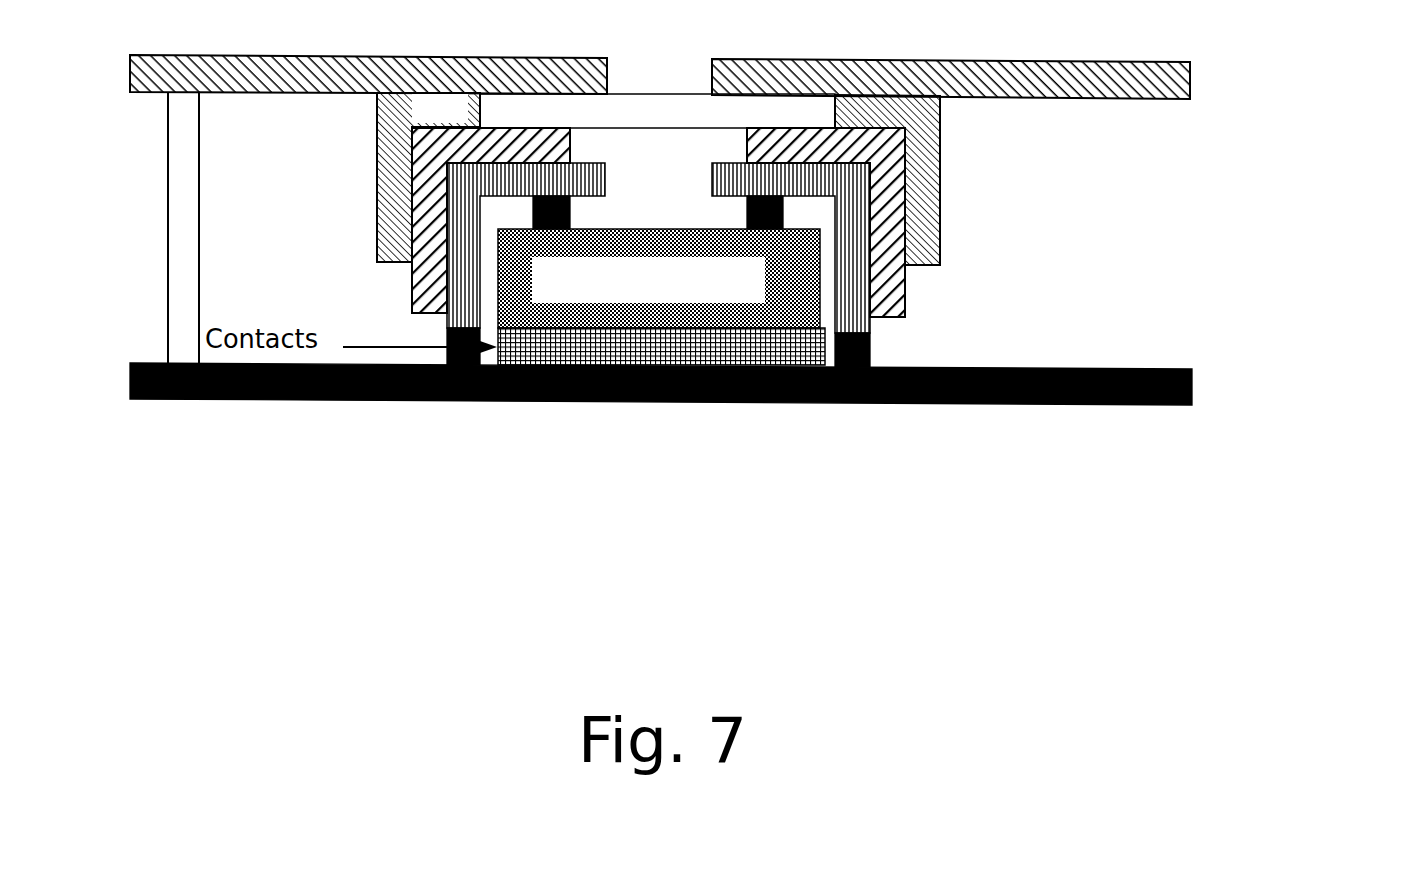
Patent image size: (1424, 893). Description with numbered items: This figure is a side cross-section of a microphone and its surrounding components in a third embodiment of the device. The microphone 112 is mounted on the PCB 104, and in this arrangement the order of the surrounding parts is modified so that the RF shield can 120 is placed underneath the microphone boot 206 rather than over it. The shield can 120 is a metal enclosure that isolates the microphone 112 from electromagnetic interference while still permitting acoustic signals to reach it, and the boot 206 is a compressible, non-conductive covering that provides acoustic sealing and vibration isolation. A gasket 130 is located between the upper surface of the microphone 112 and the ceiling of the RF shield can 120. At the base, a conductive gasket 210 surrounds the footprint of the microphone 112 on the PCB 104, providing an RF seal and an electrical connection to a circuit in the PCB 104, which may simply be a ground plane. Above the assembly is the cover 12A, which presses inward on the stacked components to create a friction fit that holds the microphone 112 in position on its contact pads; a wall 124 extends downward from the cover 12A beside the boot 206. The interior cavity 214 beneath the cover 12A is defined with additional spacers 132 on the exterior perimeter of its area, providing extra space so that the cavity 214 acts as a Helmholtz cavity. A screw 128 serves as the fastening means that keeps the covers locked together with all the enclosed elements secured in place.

The cover 12A is at (768, 77).
The interior cavity 214 is at (750, 113).
The wall 124 is at (958, 129).
The spacers 132 is at (440, 108).
The microphone boot 206 is at (923, 164).
The RF shield can 120 is at (893, 283).
The gasket 130 is at (800, 213).
The microphone 112 is at (661, 297).
The gasket 210 is at (888, 352).
The PCB 104 is at (723, 384).
The screw 128 is at (165, 283).